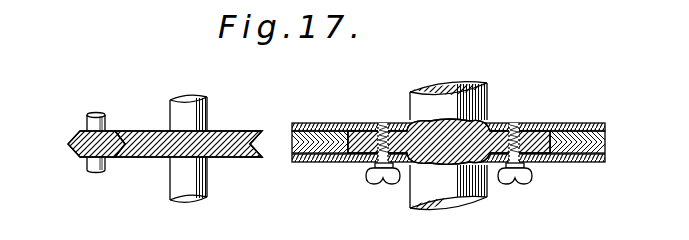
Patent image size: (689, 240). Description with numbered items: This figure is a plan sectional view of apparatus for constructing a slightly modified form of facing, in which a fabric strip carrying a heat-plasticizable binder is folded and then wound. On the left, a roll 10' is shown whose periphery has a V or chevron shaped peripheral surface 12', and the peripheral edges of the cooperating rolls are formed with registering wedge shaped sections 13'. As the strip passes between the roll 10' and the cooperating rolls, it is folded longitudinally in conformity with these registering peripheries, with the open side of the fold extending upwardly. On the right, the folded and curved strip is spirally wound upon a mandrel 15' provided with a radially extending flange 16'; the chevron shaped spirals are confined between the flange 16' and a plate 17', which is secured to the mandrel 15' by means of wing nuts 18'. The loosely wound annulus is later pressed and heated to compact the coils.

The roll 10' is at (194, 172).
The V or chevron shaped peripheral surface 12' is at (262, 162).
The wedge shaped sections 13' is at (78, 162).
The mandrel 15' is at (449, 117).
The radially extending flange 16' is at (450, 107).
The plate 17' is at (448, 181).
The wing nuts 18' is at (451, 178).